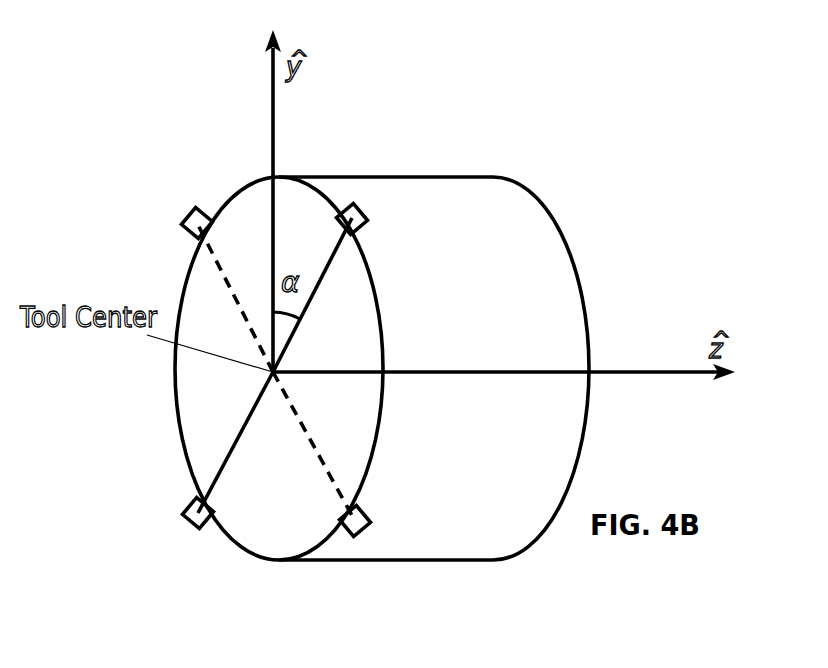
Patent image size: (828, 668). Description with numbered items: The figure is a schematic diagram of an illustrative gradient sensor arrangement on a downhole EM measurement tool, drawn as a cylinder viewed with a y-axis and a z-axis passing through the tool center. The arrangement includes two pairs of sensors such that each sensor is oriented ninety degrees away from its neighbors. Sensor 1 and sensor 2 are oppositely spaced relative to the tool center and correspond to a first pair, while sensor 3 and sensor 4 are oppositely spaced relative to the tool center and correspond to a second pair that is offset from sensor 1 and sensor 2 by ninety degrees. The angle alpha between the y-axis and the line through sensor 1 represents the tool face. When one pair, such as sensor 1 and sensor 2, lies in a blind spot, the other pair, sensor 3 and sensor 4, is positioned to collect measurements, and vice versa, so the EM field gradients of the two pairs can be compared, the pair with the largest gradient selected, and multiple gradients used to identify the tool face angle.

The sensor 1 is at (377, 282).
The sensor 2 is at (171, 456).
The sensor 3 is at (378, 458).
The sensor 4 is at (171, 285).